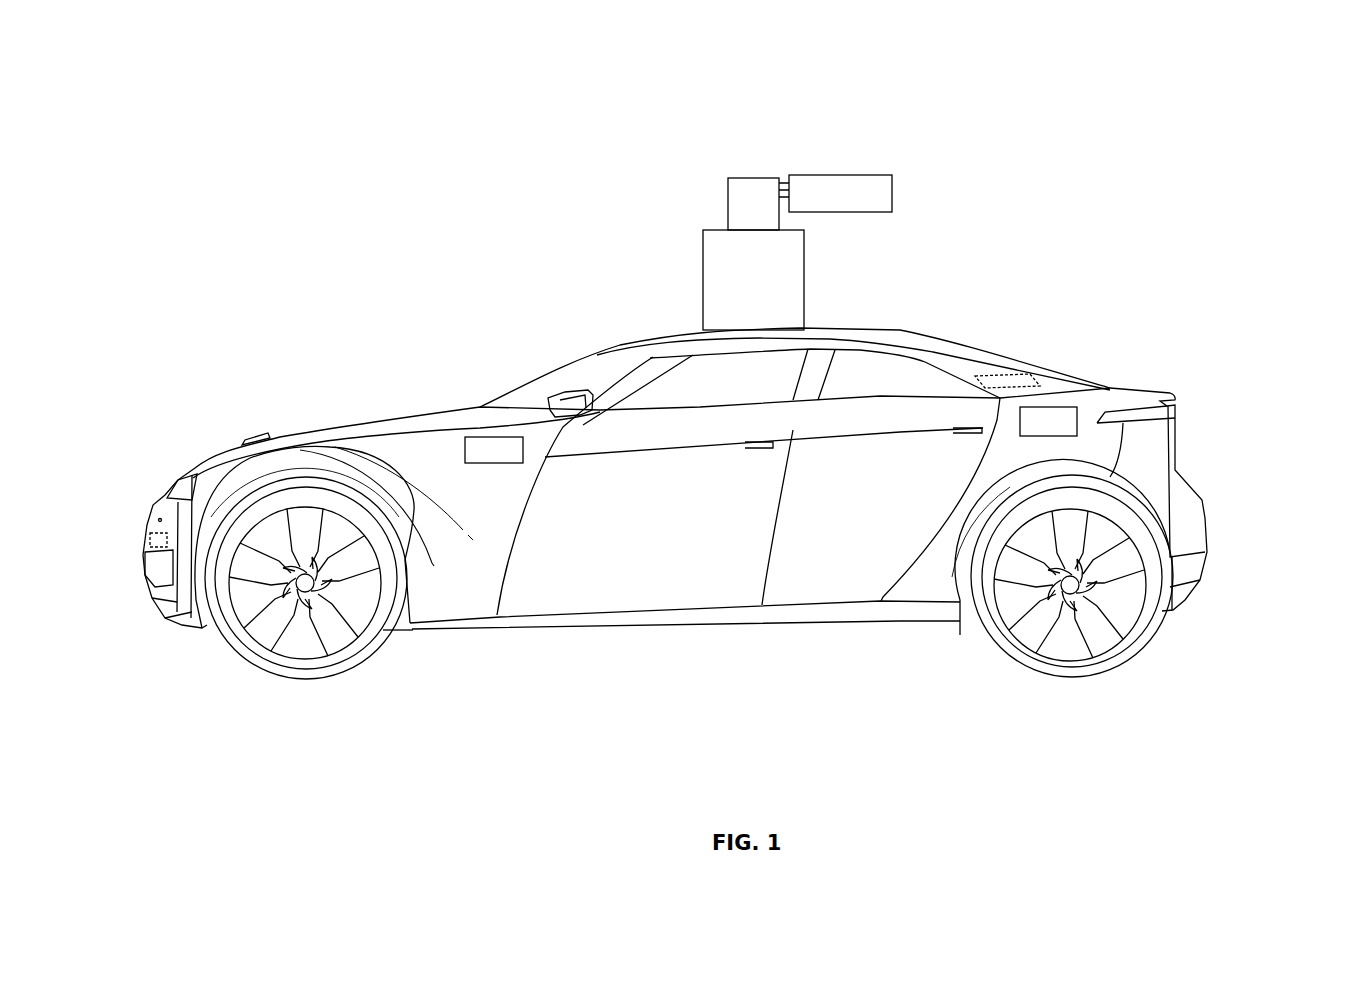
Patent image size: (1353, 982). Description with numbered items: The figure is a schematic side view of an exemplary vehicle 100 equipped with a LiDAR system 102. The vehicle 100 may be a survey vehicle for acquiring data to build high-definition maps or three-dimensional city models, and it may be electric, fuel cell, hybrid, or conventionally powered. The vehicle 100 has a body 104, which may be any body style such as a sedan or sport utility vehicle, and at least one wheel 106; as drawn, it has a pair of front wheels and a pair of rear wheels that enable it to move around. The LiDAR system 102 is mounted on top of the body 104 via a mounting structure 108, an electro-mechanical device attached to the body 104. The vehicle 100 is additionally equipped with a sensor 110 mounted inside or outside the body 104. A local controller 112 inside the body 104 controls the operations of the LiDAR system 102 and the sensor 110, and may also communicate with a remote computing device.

The vehicle 100 is at (630, 42).
The LiDAR system 102 is at (810, 142).
The body 104 is at (563, 308).
The wheel 106 is at (1185, 643).
The mounting structure 108 is at (815, 296).
The sensor 110 is at (488, 435).
The local controller 112 is at (1078, 405).